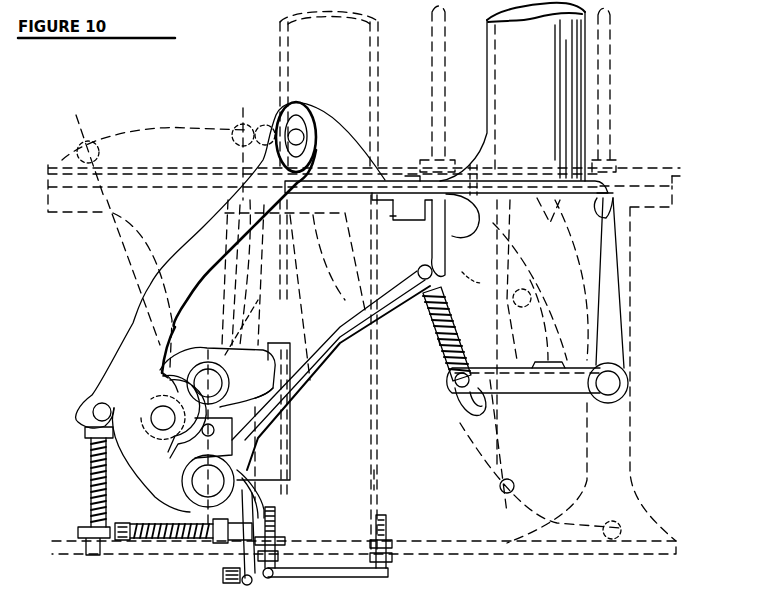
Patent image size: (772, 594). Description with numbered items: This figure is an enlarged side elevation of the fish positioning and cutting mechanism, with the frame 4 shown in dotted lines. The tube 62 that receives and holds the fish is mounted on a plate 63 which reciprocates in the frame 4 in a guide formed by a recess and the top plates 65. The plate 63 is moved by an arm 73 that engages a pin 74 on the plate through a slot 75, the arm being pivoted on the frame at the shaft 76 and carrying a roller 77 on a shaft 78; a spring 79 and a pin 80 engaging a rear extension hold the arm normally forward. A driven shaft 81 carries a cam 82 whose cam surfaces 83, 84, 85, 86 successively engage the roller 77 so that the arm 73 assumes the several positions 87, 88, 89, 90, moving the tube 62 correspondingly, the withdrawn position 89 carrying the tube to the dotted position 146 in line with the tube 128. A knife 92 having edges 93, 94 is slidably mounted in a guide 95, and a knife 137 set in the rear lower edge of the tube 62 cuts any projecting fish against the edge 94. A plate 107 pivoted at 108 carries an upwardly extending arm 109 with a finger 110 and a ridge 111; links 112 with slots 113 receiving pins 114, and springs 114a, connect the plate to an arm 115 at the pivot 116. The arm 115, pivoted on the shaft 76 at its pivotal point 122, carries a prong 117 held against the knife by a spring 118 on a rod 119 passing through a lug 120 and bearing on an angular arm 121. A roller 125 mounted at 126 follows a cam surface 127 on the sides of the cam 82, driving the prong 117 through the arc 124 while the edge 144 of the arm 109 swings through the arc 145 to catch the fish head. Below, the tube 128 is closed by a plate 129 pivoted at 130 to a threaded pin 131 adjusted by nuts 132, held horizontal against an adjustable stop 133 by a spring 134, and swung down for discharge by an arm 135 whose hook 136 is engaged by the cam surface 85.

The frame 4 is at (607, 147).
The tube 62 is at (583, 115).
The plate 63 is at (412, 176).
The top plates 65 is at (672, 178).
The arm 73 is at (140, 322).
The pin 74 is at (300, 137).
The slot 75 is at (297, 103).
The pivot shaft 76 is at (192, 486).
The roller 77 is at (160, 397).
The shaft 78 is at (151, 415).
The spring 79 is at (91, 490).
The pin 80 is at (91, 465).
The shaft 81 is at (203, 368).
The cam 82 is at (212, 360).
The cam surface 83 is at (165, 375).
The cam surface 84 is at (226, 352).
The cam surface 85 is at (290, 355).
The cam surface 86 is at (245, 392).
The arm position 87 is at (240, 130).
The arm position 88 is at (262, 125).
The arm position 89 is at (88, 148).
The arm position 90 is at (303, 125).
The knife 92 is at (413, 210).
The knife edge 93 is at (474, 215).
The knife edge 94 is at (372, 198).
The guide 95 is at (390, 220).
The plate 107 is at (535, 394).
The pivot 108 is at (628, 380).
The arm 109 is at (614, 305).
The finger 110 is at (612, 180).
The ridge 111 is at (540, 365).
The links 112 is at (452, 352).
The slots 113 is at (468, 405).
The pins 114 is at (458, 385).
The springs 114a is at (438, 340).
The arm 115 is at (325, 383).
The pivot 116 is at (421, 267).
The prong 117 is at (446, 245).
The spring 118 is at (180, 540).
The rod 119 is at (134, 541).
The lug 120 is at (118, 545).
The arm 121 is at (216, 541).
The pivotal point 122 is at (287, 483).
The arc 124 is at (540, 290).
The roller 125 is at (226, 426).
The roller mounting 126 is at (213, 434).
The cam surface 127 is at (164, 358).
The tube 128 is at (378, 478).
The plate 129 is at (320, 572).
The pivot 130 is at (273, 575).
The threaded pin 131 is at (282, 568).
The nuts 132 is at (281, 541).
The adjustable stop 133 is at (392, 560).
The spring 134 is at (227, 567).
The arm 135 is at (290, 460).
The hook 136 is at (270, 347).
The knife 137 is at (490, 183).
The edge 144 is at (612, 218).
The arc 145 is at (462, 272).
The tube position 146 is at (378, 100).